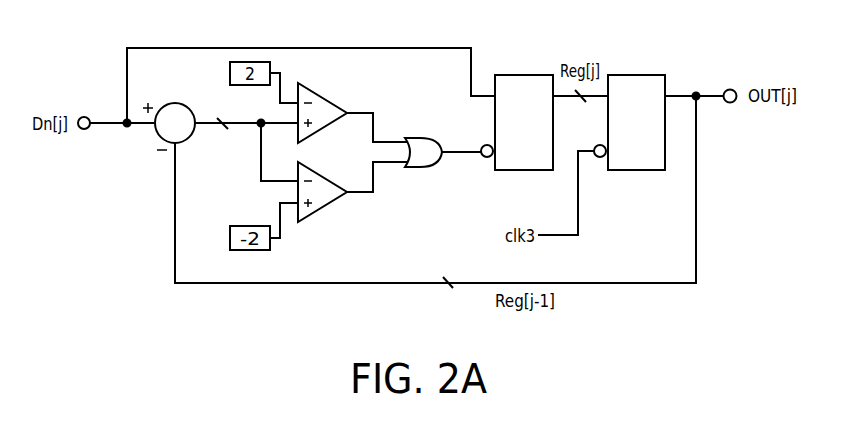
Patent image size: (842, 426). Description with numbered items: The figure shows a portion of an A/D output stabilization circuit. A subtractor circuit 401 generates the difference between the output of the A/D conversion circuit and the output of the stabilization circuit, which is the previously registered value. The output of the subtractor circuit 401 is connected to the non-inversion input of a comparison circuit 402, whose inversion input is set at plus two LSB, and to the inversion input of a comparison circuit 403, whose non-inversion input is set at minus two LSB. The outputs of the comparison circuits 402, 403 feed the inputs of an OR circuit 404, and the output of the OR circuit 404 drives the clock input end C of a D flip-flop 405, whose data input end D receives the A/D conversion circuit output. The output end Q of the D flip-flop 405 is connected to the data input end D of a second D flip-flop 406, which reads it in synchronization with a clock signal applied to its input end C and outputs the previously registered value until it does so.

The subtractor circuit 401 is at (178, 102).
The comparison circuit 402 is at (326, 95).
The comparison circuit 403 is at (318, 203).
The OR circuit 404 is at (422, 134).
The D flip-flop 405 is at (525, 72).
The D flip-flop 406 is at (639, 72).